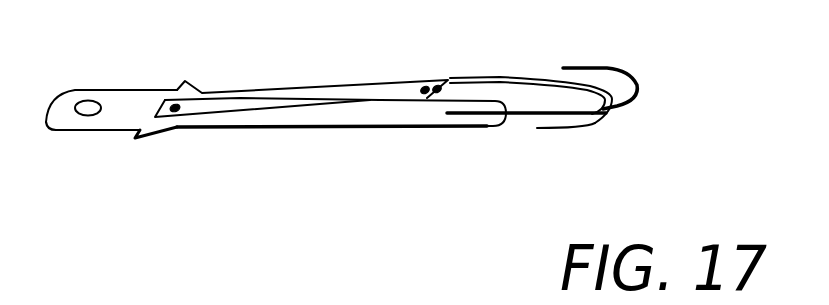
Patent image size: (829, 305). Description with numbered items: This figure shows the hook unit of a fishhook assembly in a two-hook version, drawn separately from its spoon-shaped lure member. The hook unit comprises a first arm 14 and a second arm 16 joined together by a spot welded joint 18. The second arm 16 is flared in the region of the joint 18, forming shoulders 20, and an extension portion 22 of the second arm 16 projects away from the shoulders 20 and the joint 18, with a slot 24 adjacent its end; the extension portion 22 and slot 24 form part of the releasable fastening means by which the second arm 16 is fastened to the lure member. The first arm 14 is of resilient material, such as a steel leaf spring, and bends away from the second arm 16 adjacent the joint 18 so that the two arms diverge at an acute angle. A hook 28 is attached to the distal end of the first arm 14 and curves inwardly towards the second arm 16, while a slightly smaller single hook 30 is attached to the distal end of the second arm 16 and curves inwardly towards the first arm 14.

The first arm 14 is at (358, 90).
The second arm 16 is at (413, 120).
The spot welded joint 18 is at (183, 112).
The shoulders 20 is at (138, 133).
The extension portion 22 is at (93, 131).
The slot 24 is at (92, 107).
The hook 28 is at (578, 130).
The single hook 30 is at (622, 70).